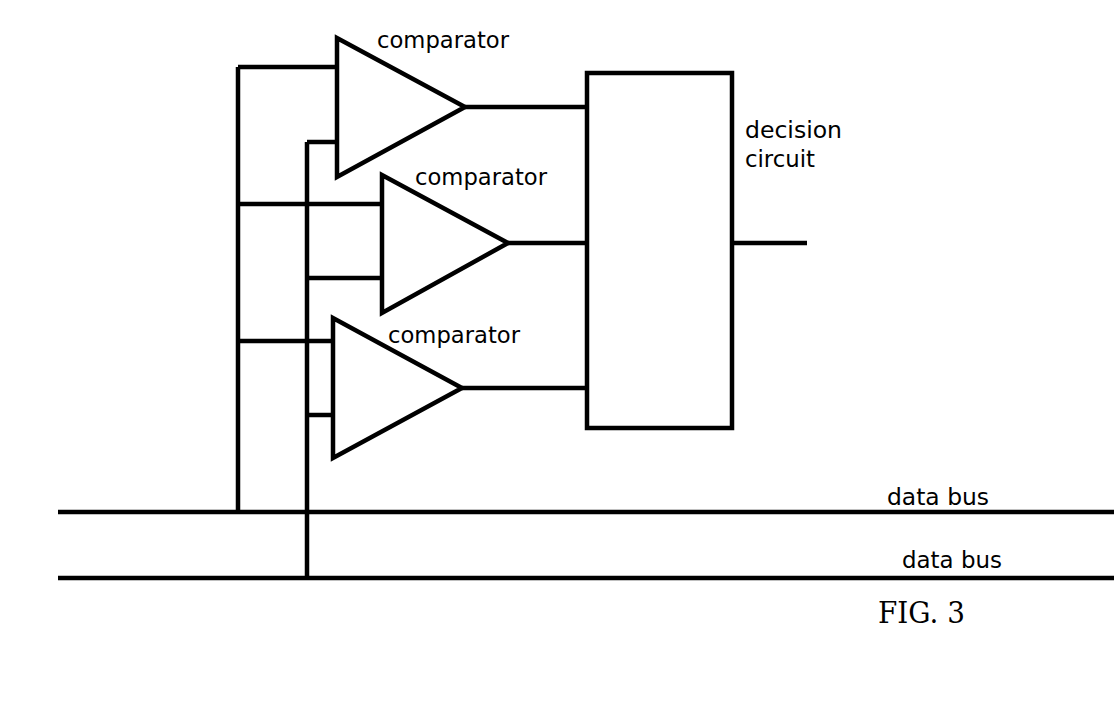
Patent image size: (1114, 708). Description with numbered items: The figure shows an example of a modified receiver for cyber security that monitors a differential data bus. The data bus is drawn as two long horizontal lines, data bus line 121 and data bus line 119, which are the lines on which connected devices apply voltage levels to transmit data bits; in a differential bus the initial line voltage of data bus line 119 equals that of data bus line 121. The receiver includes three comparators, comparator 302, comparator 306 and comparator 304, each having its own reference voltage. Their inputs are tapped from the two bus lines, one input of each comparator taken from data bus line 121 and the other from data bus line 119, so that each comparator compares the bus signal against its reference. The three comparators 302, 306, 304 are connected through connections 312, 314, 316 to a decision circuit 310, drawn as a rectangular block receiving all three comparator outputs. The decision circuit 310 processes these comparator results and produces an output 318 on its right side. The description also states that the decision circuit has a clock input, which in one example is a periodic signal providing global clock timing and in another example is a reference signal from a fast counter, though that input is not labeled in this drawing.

The comparator 302 is at (398, 121).
The comparator 304 is at (397, 384).
The comparator 306 is at (445, 257).
The decision circuit 310 is at (678, 264).
The comparator connection 312 is at (483, 104).
The comparator connection 314 is at (543, 242).
The comparator connection 316 is at (477, 385).
The decision circuit output 318 is at (763, 242).
The data bus line 121 is at (680, 509).
The data bus line 119 is at (698, 577).